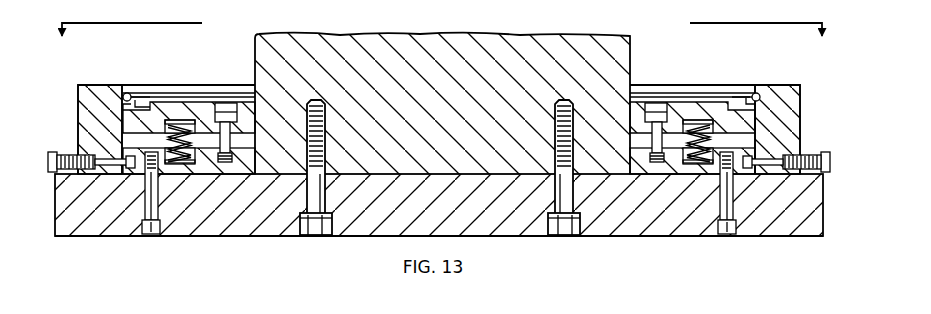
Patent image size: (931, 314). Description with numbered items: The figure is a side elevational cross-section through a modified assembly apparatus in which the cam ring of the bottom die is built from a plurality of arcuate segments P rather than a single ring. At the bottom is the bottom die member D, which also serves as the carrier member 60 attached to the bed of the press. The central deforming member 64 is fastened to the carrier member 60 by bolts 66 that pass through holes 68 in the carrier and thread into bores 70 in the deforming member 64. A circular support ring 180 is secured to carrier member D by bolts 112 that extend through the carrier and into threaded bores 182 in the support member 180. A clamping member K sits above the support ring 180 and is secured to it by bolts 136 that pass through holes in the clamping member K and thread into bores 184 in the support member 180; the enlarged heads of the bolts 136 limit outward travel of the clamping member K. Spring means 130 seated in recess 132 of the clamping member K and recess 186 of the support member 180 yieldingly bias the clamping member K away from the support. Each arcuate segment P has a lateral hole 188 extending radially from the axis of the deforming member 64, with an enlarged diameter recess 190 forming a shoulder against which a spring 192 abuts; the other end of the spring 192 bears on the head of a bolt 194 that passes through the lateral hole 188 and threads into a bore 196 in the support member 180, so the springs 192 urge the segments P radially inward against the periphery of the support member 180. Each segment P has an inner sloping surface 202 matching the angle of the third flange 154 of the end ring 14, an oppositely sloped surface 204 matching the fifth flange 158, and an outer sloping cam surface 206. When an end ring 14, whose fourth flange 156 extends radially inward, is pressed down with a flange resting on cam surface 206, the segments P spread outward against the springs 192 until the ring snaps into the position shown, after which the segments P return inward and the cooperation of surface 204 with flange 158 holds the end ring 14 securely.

The end ring 14 is at (203, 78).
The arcuate segments P is at (92, 83).
The clamping member K is at (212, 99).
The bottom die member D is at (636, 240).
The carrier member 60 is at (383, 228).
The deforming member 64 is at (488, 46).
The bolts 66 is at (320, 226).
The holes 68 is at (310, 232).
The threaded bores 70 is at (327, 112).
The bolts 112 is at (148, 236).
The spring means 130 is at (188, 168).
The recess 132 is at (180, 121).
The bolts 136 is at (238, 111).
The third flange 154 is at (124, 111).
The fourth flange 156 is at (727, 100).
The fifth flange 158 is at (124, 97).
The support ring 180 is at (243, 178).
The threaded bores 182 is at (150, 178).
The threaded bores 184 is at (233, 156).
The recess 186 is at (214, 184).
The lateral holes 188 is at (112, 155).
The enlarged diameter recesses 190 is at (86, 175).
The springs 192 is at (73, 150).
The bolts 194 is at (58, 152).
The threaded bores 196 is at (138, 175).
The inner sloping surface 202 is at (748, 97).
The oppositely sloped surface 204 is at (129, 95).
The outer sloping cam surface 206 is at (127, 93).